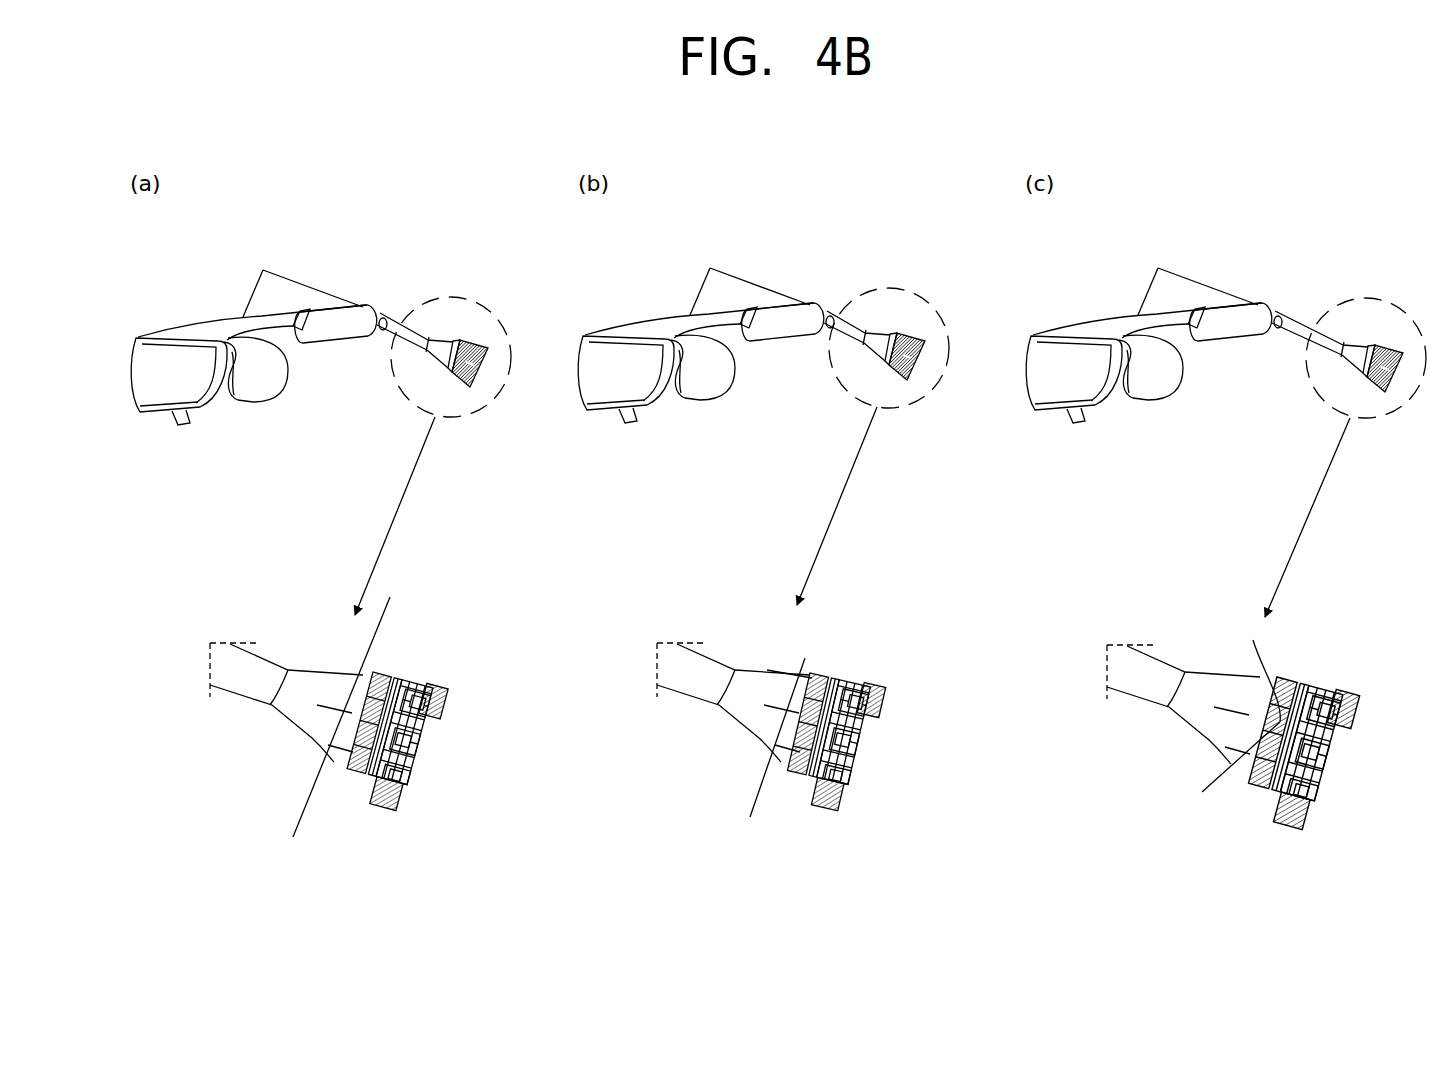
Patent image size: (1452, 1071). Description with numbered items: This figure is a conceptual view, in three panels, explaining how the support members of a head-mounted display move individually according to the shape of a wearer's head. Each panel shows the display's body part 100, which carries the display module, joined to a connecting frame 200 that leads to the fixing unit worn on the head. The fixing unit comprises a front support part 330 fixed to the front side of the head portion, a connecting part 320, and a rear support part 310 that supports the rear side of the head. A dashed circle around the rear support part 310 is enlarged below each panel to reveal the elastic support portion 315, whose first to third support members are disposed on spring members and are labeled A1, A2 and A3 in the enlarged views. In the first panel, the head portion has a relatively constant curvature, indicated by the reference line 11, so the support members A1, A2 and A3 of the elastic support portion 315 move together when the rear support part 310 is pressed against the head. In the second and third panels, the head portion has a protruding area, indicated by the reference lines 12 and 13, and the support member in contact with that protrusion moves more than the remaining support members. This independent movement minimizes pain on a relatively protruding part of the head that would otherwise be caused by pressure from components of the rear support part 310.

The body part 100 is at (153, 350).
The connecting frame 200 is at (208, 328).
The front support part 330 is at (292, 293).
The connecting part 320 is at (393, 332).
The rear support part 310 is at (473, 340).
The elastic support portion 315 is at (380, 675).
The first sensing unit A1 is at (433, 708).
The second sensing unit A2 is at (420, 747).
The third sensing unit A3 is at (410, 783).
The first position line 11 is at (326, 730).
The second position line 12 is at (768, 750).
The third position line 13 is at (1228, 731).